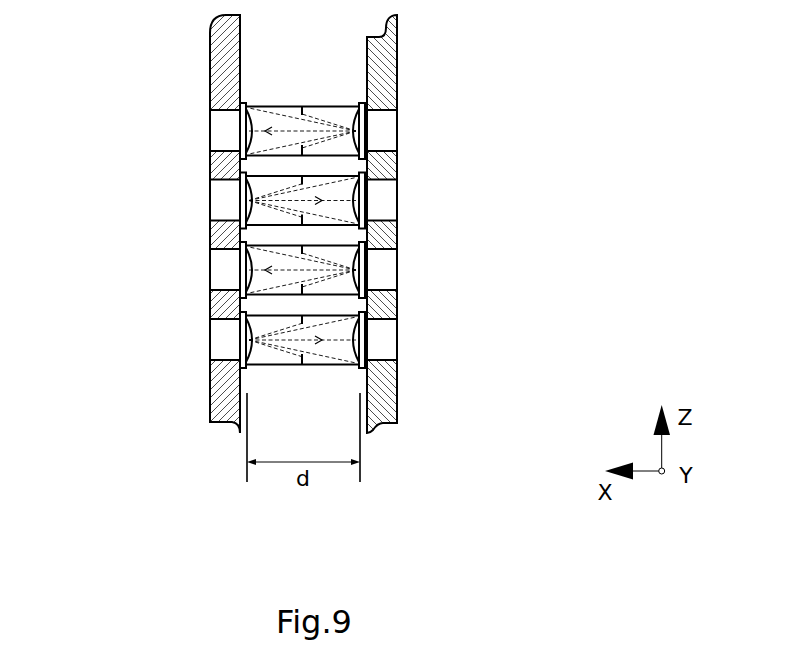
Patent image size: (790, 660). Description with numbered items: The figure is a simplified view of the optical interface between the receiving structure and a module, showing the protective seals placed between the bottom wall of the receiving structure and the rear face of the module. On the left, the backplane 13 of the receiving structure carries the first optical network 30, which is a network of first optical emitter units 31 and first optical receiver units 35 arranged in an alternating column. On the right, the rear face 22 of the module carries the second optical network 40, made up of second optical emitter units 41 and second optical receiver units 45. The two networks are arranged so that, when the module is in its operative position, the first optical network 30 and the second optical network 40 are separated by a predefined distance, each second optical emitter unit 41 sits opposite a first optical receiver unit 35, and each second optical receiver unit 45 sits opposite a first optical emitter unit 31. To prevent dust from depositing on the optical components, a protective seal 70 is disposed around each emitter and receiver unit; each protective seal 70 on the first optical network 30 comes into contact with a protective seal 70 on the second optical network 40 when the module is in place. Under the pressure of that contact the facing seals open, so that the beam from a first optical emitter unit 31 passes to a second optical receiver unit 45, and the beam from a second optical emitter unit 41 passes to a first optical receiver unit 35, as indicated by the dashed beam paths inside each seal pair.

The backplane 13 is at (227, 58).
The rear face 22 is at (385, 68).
The first optical network 30 is at (146, 237).
The first optical emitter unit 31 is at (198, 200).
The first optical receiver unit 35 is at (198, 129).
The second optical network 40 is at (459, 237).
The second optical emitter unit 41 is at (411, 128).
The second optical receiver unit 45 is at (411, 200).
The protective seal 70 is at (277, 107).